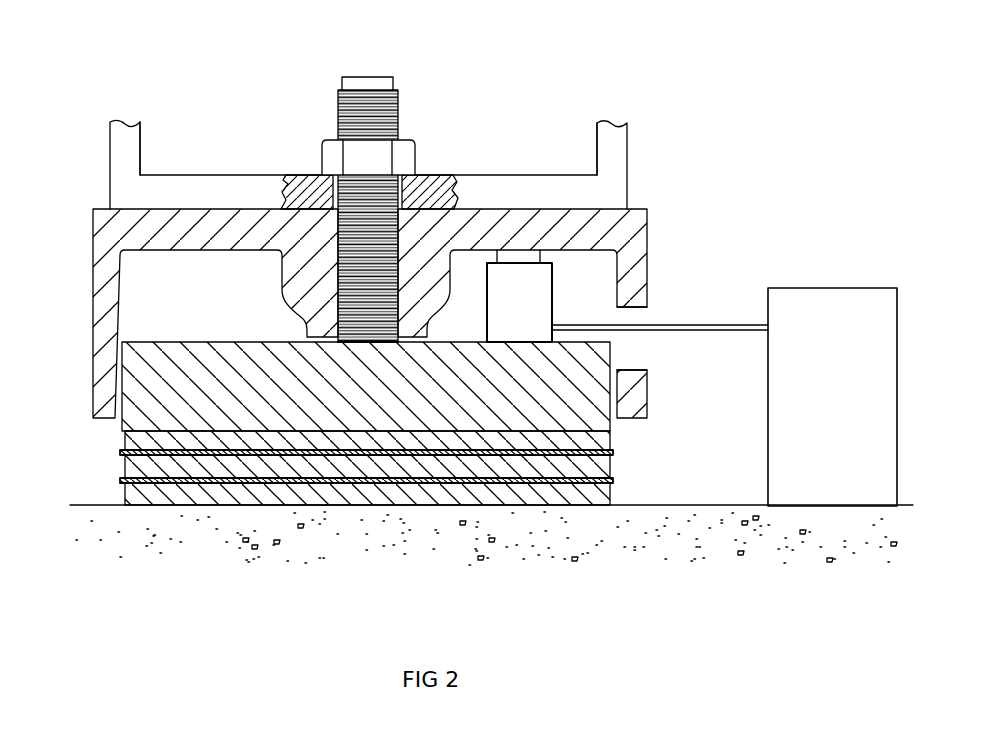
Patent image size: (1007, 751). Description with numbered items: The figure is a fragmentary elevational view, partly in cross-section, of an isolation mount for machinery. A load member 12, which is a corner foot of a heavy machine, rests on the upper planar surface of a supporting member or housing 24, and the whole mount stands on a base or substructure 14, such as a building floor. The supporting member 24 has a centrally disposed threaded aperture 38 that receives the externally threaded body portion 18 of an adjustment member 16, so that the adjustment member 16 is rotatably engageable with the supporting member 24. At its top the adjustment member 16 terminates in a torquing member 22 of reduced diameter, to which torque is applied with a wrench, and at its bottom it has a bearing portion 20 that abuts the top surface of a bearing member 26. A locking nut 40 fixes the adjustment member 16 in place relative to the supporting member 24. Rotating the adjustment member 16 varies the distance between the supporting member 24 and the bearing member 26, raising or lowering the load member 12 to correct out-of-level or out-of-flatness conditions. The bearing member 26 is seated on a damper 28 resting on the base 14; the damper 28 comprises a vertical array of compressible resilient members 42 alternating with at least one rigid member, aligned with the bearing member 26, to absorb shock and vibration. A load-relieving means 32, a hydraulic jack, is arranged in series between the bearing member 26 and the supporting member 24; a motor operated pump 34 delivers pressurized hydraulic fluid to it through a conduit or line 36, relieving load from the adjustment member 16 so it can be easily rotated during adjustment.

The load member 12 is at (627, 158).
The base or substructure 14 is at (280, 545).
The adjustment member 16 is at (365, 182).
The externally threaded body portion 18 is at (398, 122).
The bearing portion 20 is at (343, 347).
The torquing member 22 is at (393, 80).
The supporting member 24 is at (647, 217).
The bearing member 26 is at (153, 342).
The damper 28 is at (391, 452).
The load-relieving means 32 is at (552, 310).
The motor operated pump 34 is at (815, 288).
The conduit or line 36 is at (693, 324).
The threaded aperture 38 is at (338, 270).
The locking nut 40 is at (322, 148).
The compressible resilient members 42 is at (125, 495).